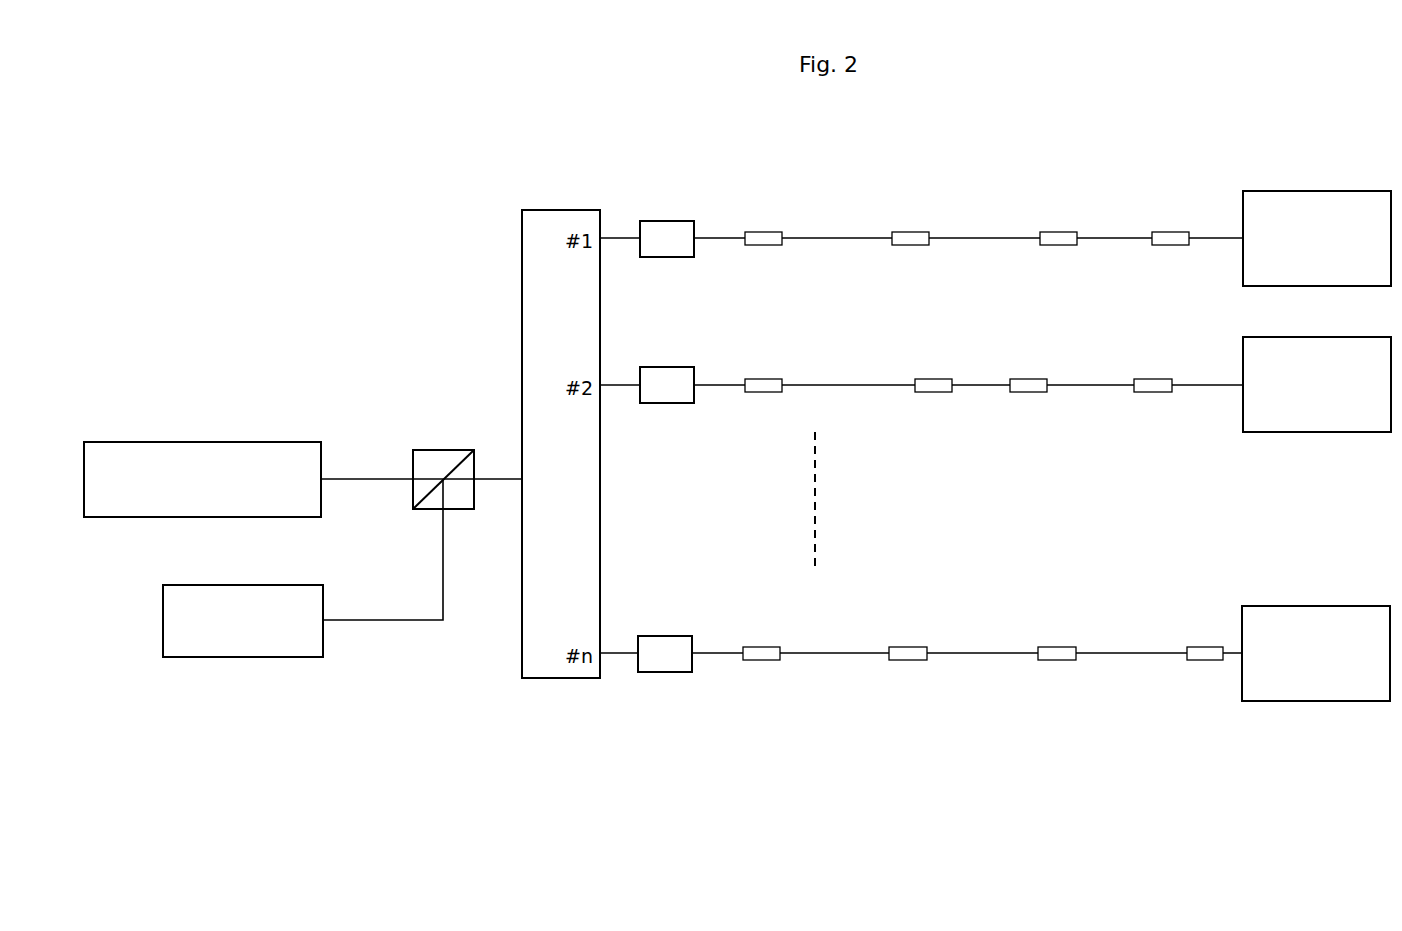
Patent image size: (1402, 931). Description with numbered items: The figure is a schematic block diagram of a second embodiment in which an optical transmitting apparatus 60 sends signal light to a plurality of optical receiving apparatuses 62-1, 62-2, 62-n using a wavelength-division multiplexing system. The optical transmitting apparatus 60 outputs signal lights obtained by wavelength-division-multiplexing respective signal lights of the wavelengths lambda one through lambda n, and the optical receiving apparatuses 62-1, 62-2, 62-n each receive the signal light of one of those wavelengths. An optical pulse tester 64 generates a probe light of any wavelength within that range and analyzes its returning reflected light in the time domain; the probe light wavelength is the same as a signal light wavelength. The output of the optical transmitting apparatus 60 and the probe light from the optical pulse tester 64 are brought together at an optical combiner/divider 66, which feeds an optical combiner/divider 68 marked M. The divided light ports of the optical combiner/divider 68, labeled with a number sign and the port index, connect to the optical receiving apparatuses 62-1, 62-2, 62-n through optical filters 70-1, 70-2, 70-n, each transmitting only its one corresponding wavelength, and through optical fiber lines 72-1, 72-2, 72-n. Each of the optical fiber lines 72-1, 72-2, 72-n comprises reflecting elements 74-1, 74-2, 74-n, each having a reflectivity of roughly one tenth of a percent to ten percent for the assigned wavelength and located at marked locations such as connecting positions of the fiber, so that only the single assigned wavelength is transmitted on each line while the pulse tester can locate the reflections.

The optical transmitting apparatus 60 is at (232, 452).
The optical receiving apparatus 62-1 is at (1331, 202).
The optical receiving apparatus 62-2 is at (1346, 352).
The optical receiving apparatus 62-n is at (1346, 622).
The optical pulse tester 64 is at (242, 657).
The optical combiner/divider 66 is at (441, 452).
The optical combiner/divider 68 is at (560, 216).
The optical filter 70-1 is at (665, 221).
The optical filter 70-2 is at (664, 367).
The optical filter 70-n is at (666, 640).
The optical fiber line 72-1 is at (1002, 237).
The optical fiber line 72-2 is at (987, 383).
The optical fiber line 72-n is at (988, 651).
The reflecting element 74-1 is at (912, 232).
The reflecting element 74-2 is at (932, 379).
The reflecting element 74-n is at (910, 647).